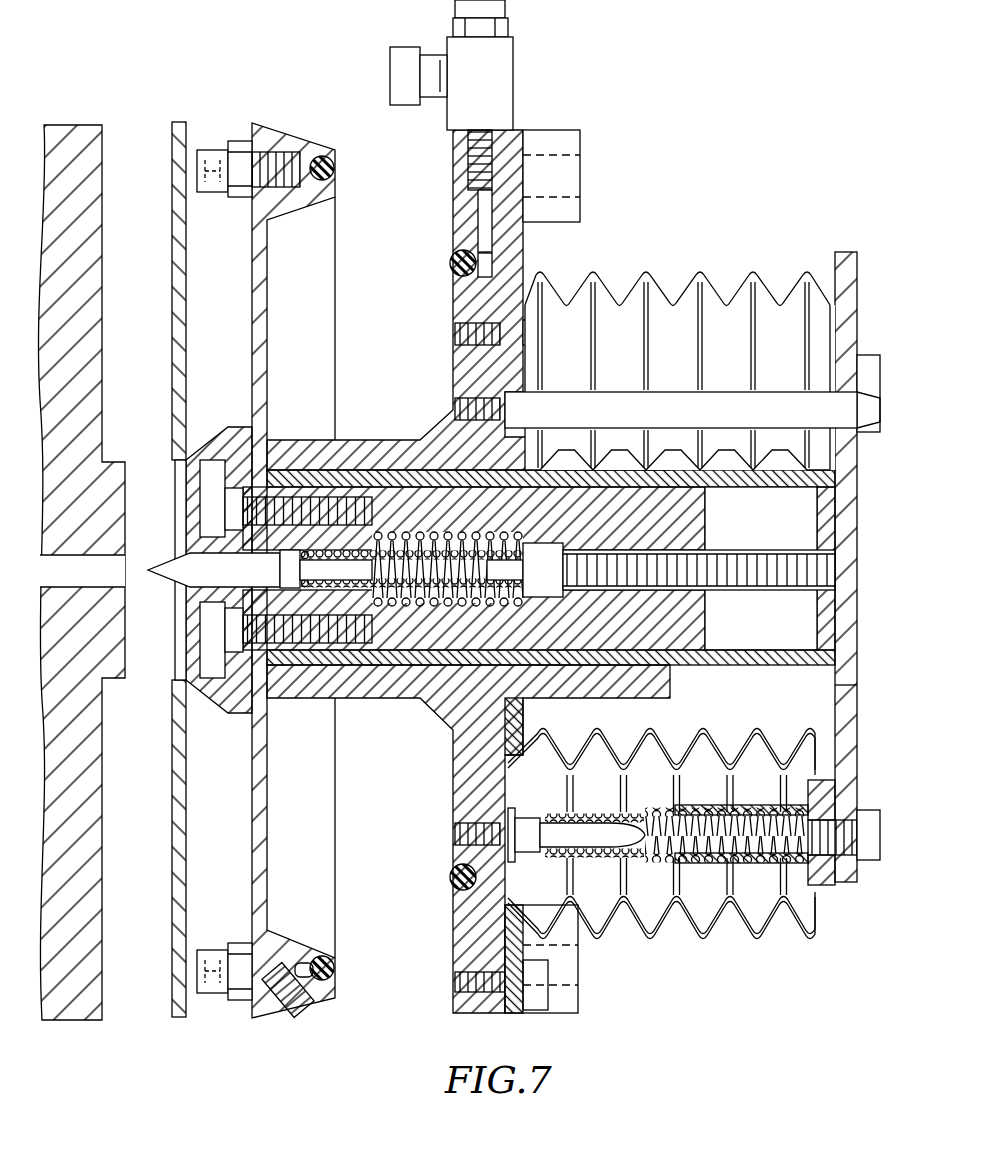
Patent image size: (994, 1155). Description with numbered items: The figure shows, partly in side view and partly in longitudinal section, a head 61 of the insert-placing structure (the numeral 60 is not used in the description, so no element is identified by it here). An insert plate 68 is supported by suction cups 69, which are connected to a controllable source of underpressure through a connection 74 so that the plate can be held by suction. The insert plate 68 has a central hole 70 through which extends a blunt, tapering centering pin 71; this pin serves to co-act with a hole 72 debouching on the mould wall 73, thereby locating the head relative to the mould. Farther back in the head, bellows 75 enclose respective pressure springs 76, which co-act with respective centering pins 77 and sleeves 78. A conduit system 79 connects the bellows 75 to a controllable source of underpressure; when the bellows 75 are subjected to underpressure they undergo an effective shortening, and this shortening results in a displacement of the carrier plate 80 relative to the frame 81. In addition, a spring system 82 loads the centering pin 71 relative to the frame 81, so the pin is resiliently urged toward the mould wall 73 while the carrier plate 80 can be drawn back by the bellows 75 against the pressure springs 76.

The spray nozzle assembly 60 is at (662, 146).
The head 61 is at (846, 567).
The insert plate 68 is at (172, 1000).
The suction cups 69 is at (205, 150).
The central hole 70 is at (160, 667).
The centering pin 71 is at (168, 552).
The hole 72 is at (118, 573).
The mould wall 73 is at (102, 212).
The connection 74 is at (295, 1012).
The bellows 75 is at (660, 280).
The pressure springs 76 is at (668, 916).
The centering pins 77 is at (595, 840).
The sleeves 78 is at (765, 745).
The conduit system 79 is at (480, 228).
The carrier plate 80 is at (285, 125).
The frame 81 is at (458, 935).
The spring system 82 is at (395, 600).